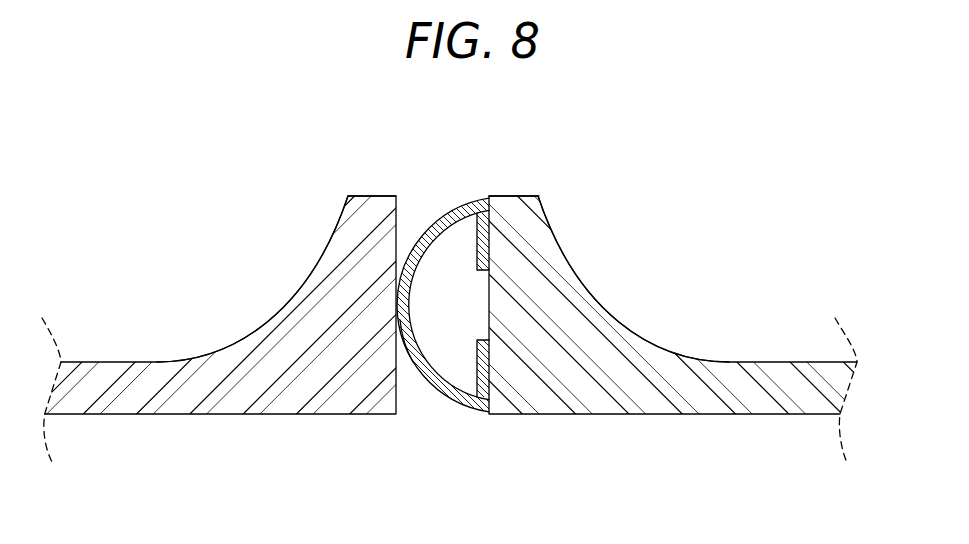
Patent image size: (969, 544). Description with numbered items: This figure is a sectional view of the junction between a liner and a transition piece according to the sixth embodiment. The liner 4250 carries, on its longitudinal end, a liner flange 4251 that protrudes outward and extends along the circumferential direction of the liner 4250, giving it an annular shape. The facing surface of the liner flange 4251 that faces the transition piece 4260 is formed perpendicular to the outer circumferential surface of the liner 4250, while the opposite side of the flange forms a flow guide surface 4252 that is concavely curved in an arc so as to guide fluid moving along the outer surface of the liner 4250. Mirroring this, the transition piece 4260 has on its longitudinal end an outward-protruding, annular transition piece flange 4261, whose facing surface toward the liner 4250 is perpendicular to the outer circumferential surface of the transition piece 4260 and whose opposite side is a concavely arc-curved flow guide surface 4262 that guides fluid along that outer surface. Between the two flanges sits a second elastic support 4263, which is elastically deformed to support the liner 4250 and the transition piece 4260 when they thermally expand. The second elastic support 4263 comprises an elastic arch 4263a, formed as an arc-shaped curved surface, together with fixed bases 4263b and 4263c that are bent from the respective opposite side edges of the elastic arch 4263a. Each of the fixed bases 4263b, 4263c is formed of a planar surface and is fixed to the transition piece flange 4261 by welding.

The liner 4250 is at (238, 417).
The liner flange 4251 is at (372, 197).
The flow guide surface 4252 is at (293, 302).
The transition piece 4260 is at (646, 417).
The transition piece flange 4261 is at (515, 197).
The flow guide surface 4262 is at (593, 302).
The second elastic support 4263 is at (437, 211).
The elastic arch 4263a is at (413, 362).
The fixed base 4263b is at (477, 238).
The fixed base 4263c is at (477, 371).